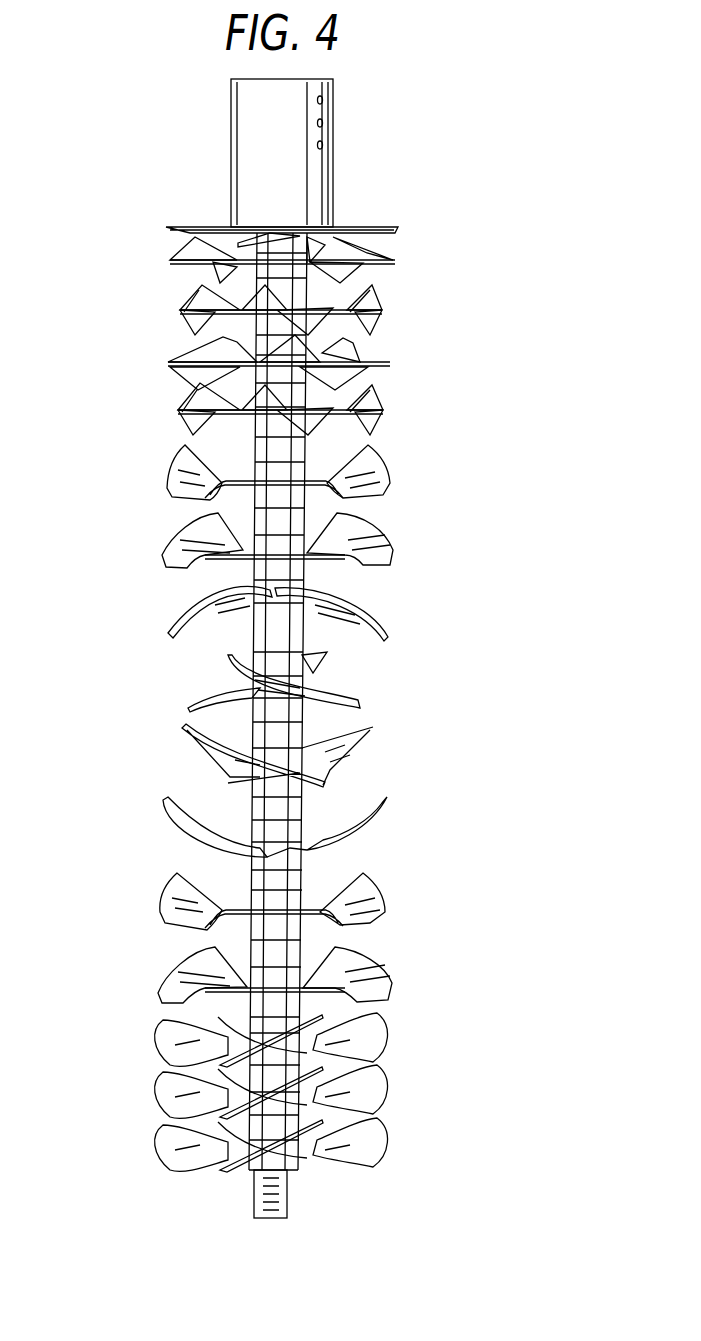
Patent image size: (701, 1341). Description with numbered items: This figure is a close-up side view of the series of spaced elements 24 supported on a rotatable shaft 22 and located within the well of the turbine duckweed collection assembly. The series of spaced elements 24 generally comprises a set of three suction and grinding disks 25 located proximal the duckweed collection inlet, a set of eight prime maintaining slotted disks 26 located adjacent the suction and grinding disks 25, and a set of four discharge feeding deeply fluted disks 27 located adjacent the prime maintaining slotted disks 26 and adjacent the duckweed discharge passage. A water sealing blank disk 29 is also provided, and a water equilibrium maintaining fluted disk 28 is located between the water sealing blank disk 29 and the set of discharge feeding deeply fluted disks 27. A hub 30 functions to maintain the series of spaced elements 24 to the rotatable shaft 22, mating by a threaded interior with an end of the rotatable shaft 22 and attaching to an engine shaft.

The rotatable shaft 22 is at (268, 1218).
The series of spaced elements 24 is at (468, 407).
The suction and grinding disks 25 is at (385, 1137).
The prime maintaining slotted disks 26 is at (373, 727).
The discharge feeding deeply fluted disks 27 is at (178, 410).
The water equilibrium maintaining fluted disk 28 is at (340, 253).
The water sealing blank disk 29 is at (167, 226).
The hub 30 is at (334, 159).